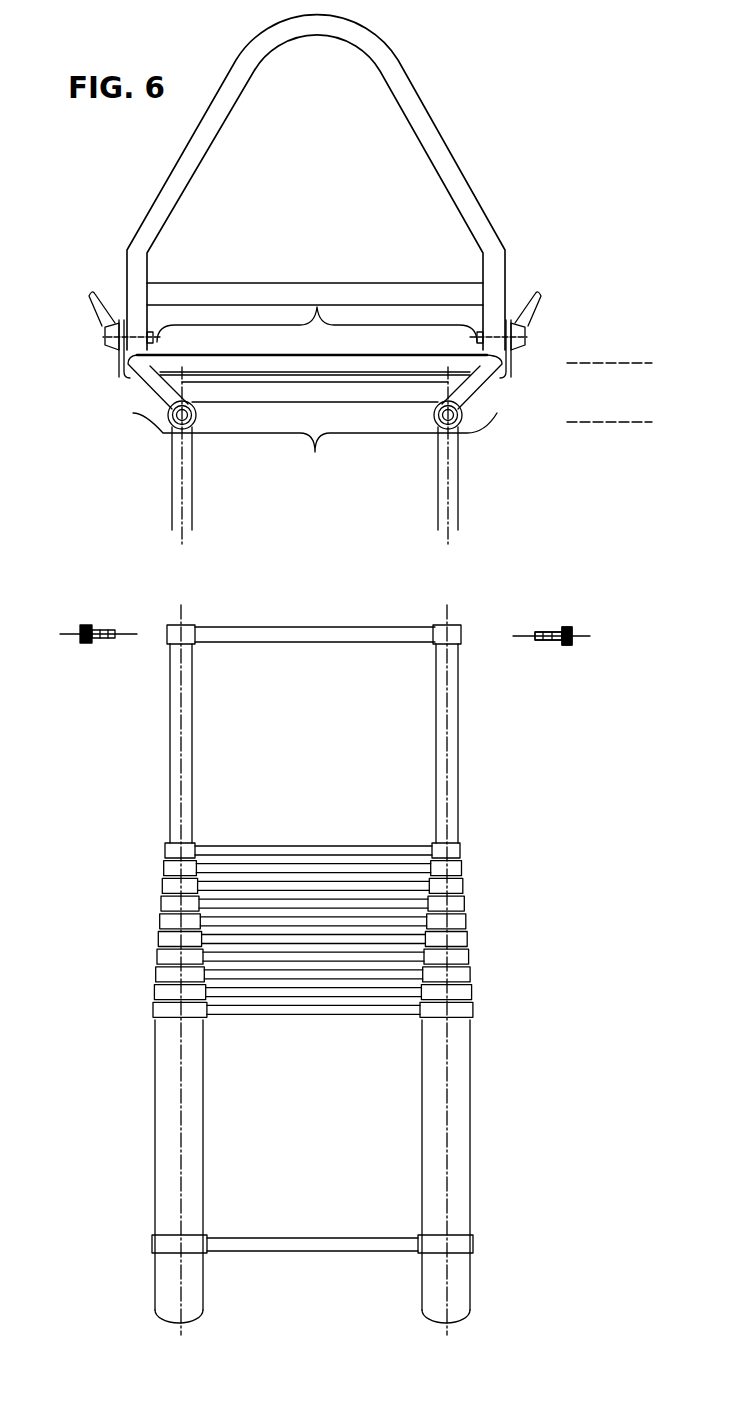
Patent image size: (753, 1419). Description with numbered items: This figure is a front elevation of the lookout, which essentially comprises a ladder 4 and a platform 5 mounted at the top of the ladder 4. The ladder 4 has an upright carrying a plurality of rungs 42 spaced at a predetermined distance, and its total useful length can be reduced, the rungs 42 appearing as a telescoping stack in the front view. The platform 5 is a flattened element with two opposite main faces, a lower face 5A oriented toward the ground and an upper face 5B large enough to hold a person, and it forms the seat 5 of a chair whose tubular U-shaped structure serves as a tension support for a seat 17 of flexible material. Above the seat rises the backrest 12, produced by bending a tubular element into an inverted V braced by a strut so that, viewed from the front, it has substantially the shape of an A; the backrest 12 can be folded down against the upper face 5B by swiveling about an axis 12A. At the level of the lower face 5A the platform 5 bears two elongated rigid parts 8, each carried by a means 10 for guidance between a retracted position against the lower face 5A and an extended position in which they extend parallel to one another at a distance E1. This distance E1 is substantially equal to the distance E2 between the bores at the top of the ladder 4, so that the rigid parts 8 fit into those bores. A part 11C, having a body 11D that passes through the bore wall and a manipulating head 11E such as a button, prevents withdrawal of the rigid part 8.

The ladder 4 is at (148, 630).
The platform 5 is at (667, 360).
The lower face 5A is at (315, 452).
The upper face 5B is at (317, 306).
The elongated rigid parts 8 is at (148, 435).
The means for guidance 10 is at (158, 409).
The part 11C is at (91, 650).
The body 11D is at (546, 632).
The manipulating head 11E is at (567, 630).
The backrest 12 is at (575, 8).
The axis 12A is at (541, 336).
The seat of flexible material 17 is at (373, 355).
The rungs 42 is at (270, 646).
The distance between the telescopic elements E1 is at (448, 543).
The distance between the bores E2 is at (448, 603).